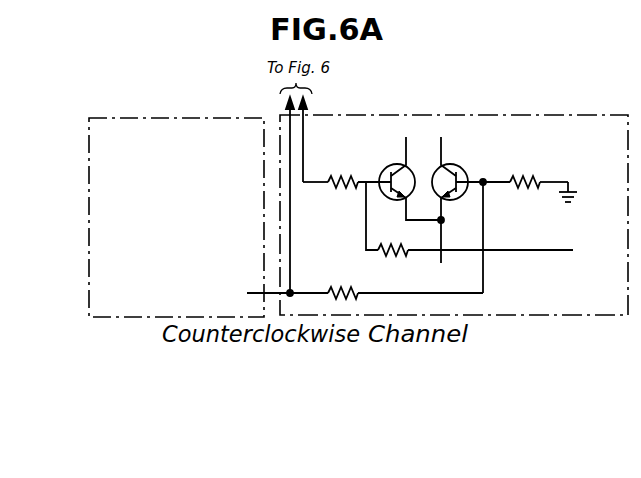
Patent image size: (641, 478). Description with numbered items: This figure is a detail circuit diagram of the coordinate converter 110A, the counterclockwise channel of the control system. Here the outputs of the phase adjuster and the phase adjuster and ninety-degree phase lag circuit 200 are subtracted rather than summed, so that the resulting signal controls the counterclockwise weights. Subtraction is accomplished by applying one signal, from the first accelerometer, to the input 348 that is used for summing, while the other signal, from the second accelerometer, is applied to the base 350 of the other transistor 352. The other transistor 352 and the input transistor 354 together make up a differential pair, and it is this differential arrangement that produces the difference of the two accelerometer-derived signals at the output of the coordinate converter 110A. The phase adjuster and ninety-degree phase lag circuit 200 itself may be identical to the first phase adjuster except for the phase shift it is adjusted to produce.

The phase adjuster and 90°-phase lag circuit 200 is at (122, 117).
The coordinate converter 110A is at (473, 112).
The input 348 is at (368, 179).
The base 350 is at (486, 180).
The transistor 352 is at (452, 165).
The input transistor 354 is at (398, 199).